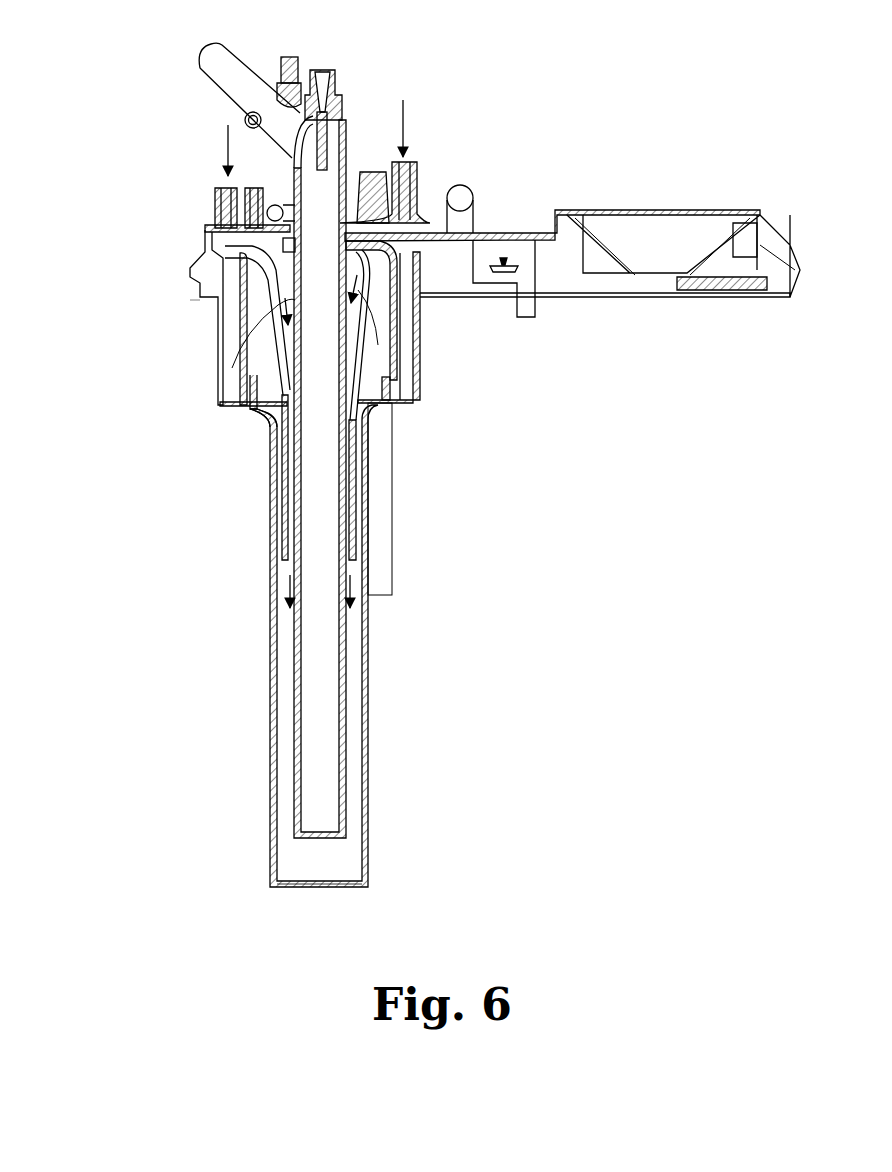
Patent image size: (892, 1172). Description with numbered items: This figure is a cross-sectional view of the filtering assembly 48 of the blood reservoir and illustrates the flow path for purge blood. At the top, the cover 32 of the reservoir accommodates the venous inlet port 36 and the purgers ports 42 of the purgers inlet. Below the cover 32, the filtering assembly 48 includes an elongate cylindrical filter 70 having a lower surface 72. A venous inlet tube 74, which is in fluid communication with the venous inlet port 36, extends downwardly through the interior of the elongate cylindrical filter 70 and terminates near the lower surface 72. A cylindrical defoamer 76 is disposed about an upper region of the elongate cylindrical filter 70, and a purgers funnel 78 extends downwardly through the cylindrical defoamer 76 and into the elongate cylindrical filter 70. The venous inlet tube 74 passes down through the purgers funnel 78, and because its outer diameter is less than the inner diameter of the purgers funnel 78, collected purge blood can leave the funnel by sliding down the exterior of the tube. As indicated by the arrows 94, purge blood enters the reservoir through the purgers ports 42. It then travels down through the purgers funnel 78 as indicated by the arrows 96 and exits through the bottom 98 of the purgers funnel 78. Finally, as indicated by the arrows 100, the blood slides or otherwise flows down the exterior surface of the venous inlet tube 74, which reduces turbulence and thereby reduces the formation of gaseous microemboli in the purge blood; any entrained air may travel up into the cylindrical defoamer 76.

The cover 32 is at (655, 248).
The venous inlet port 36 is at (235, 68).
The purgers ports 42 is at (215, 213).
The filtering assembly 48 is at (136, 306).
The elongate cylindrical filter 70 is at (272, 797).
The lower surface 72 is at (317, 873).
The venous inlet tube 74 is at (308, 683).
The cylindrical defoamer 76 is at (218, 387).
The purgers funnel 78 is at (283, 352).
The arrows 94 is at (228, 143).
The arrows 96 is at (250, 300).
The bottom 98 is at (277, 560).
The arrows 100 is at (288, 530).